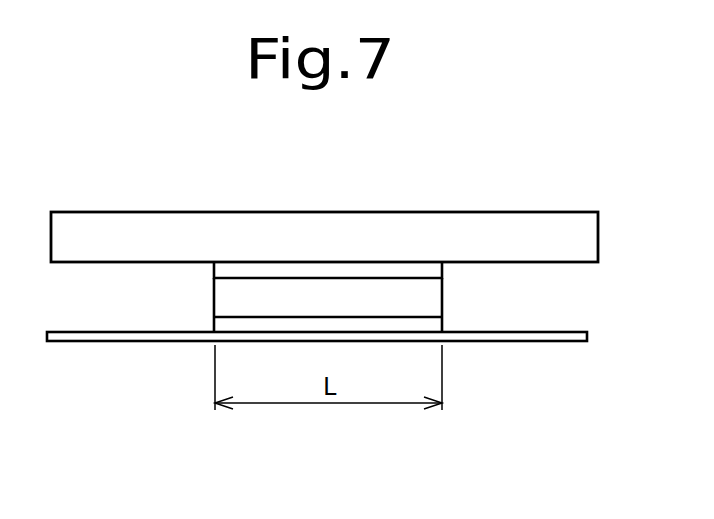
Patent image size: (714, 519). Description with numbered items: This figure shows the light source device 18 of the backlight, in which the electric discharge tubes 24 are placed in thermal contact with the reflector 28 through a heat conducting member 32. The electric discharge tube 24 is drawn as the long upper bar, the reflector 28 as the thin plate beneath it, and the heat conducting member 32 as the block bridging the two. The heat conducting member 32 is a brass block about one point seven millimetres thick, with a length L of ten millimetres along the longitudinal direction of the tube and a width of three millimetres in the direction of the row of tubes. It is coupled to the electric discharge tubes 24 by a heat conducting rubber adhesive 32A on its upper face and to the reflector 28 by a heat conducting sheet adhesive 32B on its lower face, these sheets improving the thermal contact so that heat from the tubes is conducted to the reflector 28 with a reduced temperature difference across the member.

The light source device 18 is at (334, 201).
The electric discharge tube 24 is at (203, 232).
The reflector 28 is at (128, 334).
The heat conducting member 32 is at (422, 297).
The heat conducting rubber (adhesive) 32A is at (387, 267).
The heat conducting sheet (adhesive) 32B is at (395, 325).